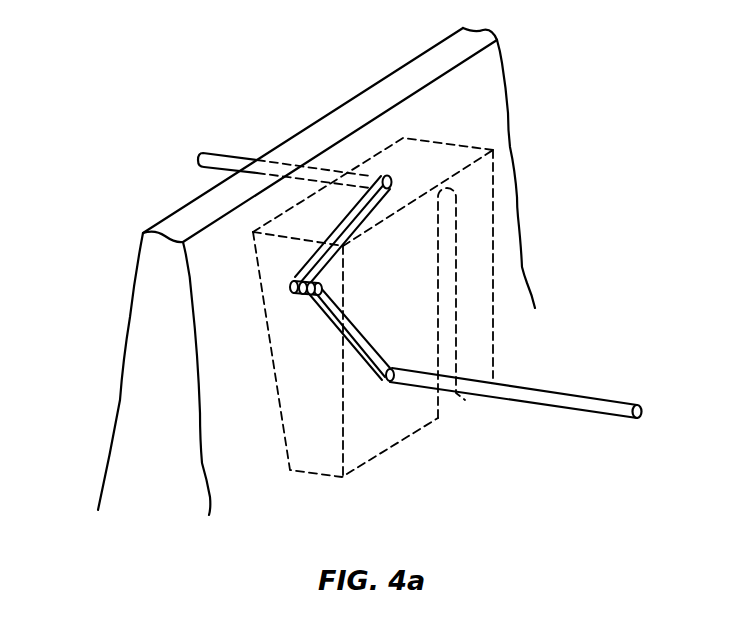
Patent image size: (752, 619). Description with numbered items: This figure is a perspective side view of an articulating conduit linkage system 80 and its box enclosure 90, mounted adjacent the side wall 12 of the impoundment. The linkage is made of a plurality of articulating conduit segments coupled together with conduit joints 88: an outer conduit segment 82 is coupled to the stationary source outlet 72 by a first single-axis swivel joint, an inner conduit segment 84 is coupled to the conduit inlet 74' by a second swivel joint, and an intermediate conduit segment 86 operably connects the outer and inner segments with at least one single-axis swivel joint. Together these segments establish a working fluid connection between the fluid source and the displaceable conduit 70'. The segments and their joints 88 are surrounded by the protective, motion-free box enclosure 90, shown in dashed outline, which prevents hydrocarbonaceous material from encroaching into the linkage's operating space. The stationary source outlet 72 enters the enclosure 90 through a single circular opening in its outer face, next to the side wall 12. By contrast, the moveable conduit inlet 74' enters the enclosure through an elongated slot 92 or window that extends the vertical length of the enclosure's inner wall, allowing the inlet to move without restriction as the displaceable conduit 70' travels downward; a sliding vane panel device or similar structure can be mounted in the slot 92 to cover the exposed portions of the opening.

The side wall 12 is at (130, 317).
The source outlet 72 is at (220, 152).
The conduit linkage system 80 is at (640, 212).
The outer conduit segment 82 is at (347, 237).
The inner conduit segment 84 is at (367, 343).
The intermediate conduit segment 86 is at (303, 294).
The conduit joints 88 is at (371, 186).
The box enclosure 90 is at (495, 202).
The elongated slot 92 is at (455, 280).
The displaceable conduit 70' is at (548, 378).
The conduit inlet 74' is at (457, 442).